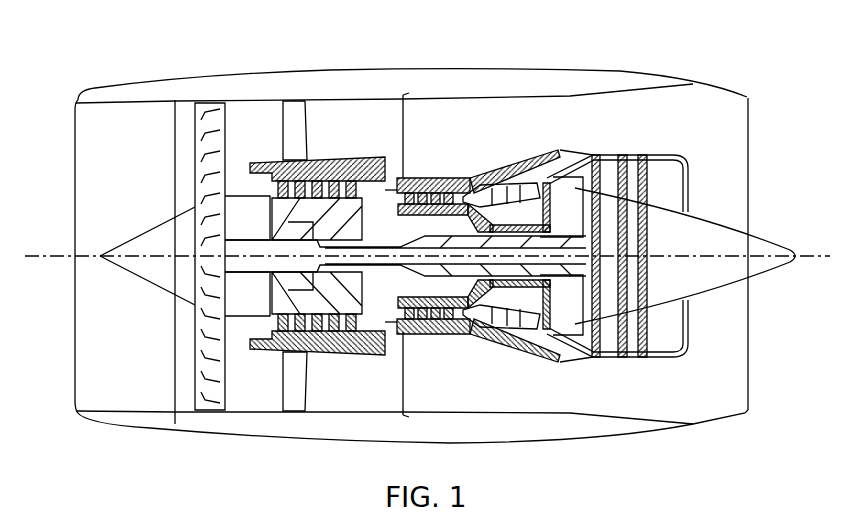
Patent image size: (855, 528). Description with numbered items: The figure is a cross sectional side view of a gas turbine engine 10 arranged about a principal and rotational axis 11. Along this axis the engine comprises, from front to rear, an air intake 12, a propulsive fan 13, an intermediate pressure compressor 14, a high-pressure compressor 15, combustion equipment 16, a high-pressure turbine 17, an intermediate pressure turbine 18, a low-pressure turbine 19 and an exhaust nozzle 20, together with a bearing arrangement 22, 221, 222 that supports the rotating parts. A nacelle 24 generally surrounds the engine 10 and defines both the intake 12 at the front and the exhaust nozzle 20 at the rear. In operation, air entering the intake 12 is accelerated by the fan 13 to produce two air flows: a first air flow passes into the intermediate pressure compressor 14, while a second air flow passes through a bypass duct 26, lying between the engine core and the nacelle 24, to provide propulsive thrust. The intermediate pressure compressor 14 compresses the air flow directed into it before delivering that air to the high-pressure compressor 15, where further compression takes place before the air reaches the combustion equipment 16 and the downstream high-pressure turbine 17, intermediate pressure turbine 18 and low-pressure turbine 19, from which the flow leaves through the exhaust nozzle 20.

The gas turbine engine 10 is at (64, 116).
The principal and rotational axis 11 is at (62, 256).
The air intake 12 is at (152, 100).
The propulsive fan 13 is at (195, 378).
The intermediate pressure compressor 14 is at (332, 352).
The high-pressure compressor 15 is at (447, 183).
The combustion equipment 16 is at (493, 330).
The high-pressure turbine 17 is at (540, 330).
The intermediate pressure turbine 18 is at (582, 176).
The low-pressure turbine 19 is at (598, 352).
The exhaust nozzle 20 is at (752, 382).
The bearing arrangement 22 is at (374, 261).
The bearing arrangement 221 is at (374, 261).
The bearing arrangement 222 is at (288, 180).
The nacelle 24 is at (598, 70).
The bypass duct 26 is at (292, 258).